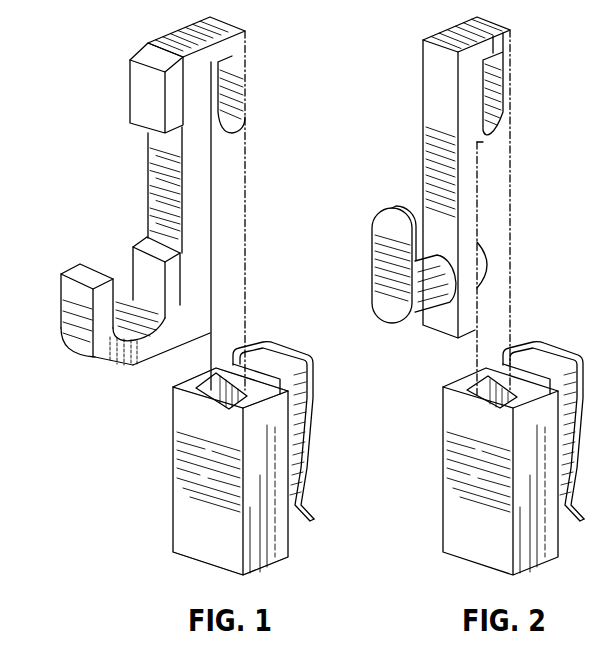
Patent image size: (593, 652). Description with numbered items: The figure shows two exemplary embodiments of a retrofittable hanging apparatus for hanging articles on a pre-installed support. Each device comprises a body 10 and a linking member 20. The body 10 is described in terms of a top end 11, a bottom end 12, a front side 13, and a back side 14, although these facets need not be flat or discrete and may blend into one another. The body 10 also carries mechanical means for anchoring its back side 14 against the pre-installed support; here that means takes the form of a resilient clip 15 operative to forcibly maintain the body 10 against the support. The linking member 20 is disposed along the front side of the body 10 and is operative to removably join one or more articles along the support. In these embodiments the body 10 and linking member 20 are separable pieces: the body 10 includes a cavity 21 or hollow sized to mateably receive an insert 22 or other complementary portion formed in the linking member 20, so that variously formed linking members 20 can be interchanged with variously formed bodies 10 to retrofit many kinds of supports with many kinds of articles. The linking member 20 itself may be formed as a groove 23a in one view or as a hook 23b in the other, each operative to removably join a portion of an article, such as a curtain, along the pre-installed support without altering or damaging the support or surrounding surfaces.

In FIG. 1, the body 10 is at (203, 470).
In FIG. 2, the body 10 is at (472, 471).
In FIG. 1, the top end 11 is at (185, 386).
In FIG. 1, the bottom end 12 is at (257, 575).
In FIG. 1, the front side 13 is at (190, 542).
In FIG. 1, the back side 14 is at (292, 548).
In FIG. 1, the resilient clip 15 is at (308, 398).
In FIG. 2, the resilient clip 15 is at (537, 350).
In FIG. 1, the linking member 20 is at (151, 203).
In FIG. 2, the linking member 20 is at (461, 206).
In FIG. 1, the cavity 21 is at (208, 388).
In FIG. 2, the cavity 21 is at (492, 392).
In FIG. 1, the insert 22 is at (238, 98).
In FIG. 2, the insert 22 is at (493, 84).
In FIG. 1, the groove 23a is at (72, 300).
In FIG. 2, the hook 23b is at (382, 276).